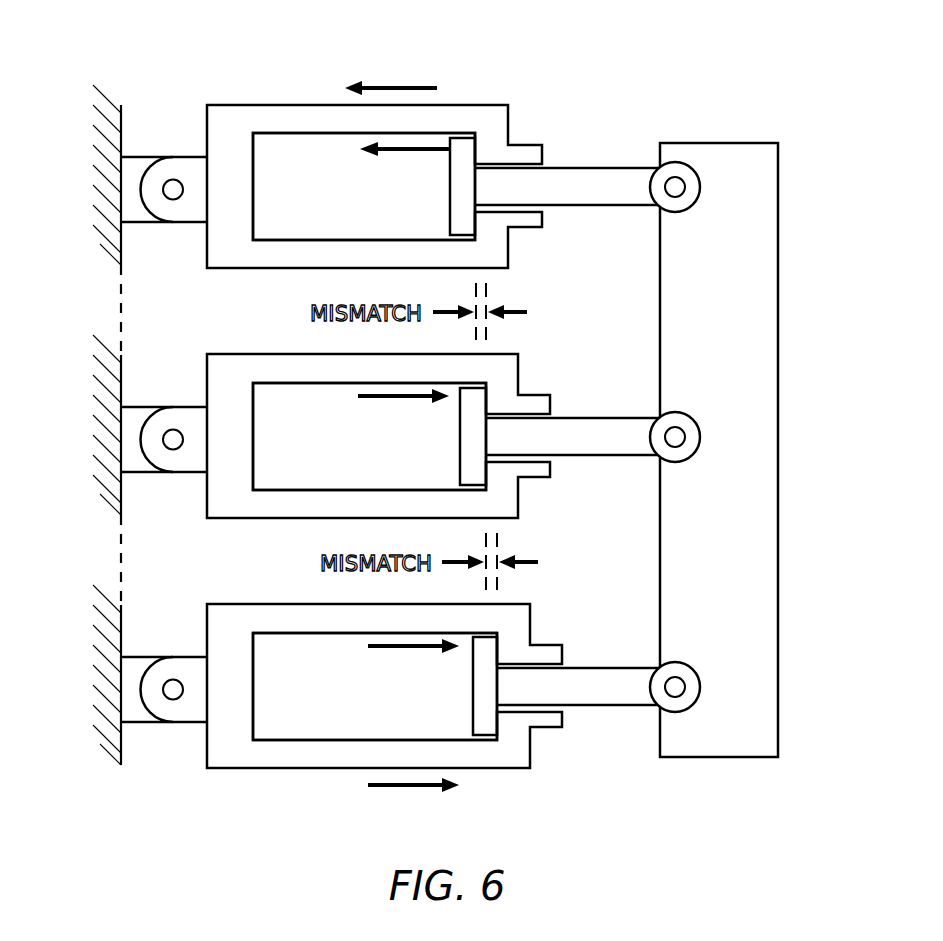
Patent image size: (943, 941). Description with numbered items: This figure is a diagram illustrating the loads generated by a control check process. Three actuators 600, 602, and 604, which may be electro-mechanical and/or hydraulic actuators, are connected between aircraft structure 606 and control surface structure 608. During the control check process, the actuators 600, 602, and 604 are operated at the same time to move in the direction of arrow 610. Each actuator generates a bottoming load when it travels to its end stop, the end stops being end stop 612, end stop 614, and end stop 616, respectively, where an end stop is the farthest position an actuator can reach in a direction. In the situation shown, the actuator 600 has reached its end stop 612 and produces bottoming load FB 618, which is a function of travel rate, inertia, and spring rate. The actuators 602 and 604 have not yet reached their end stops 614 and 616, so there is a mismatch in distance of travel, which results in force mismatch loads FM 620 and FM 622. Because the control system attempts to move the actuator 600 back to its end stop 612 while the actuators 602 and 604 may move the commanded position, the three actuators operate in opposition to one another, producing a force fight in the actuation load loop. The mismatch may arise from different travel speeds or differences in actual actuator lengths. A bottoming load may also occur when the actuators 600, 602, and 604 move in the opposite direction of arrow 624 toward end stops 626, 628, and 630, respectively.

The actuator 600 is at (320, 105).
The actuator 602 is at (255, 354).
The actuator 604 is at (320, 768).
The aircraft structure 606 is at (120, 300).
The control surface structure 608 is at (720, 143).
The arrow 610 is at (405, 790).
The end stop 612 is at (478, 144).
The end stop 614 is at (488, 392).
The end stop 616 is at (497, 721).
The bottoming load FB 618 is at (389, 153).
The force mismatch load FM 620 is at (373, 399).
The force mismatch load FM 622 is at (386, 649).
The arrow 624 is at (398, 88).
The end stop 626 is at (257, 148).
The end stop 628 is at (256, 474).
The end stop 630 is at (257, 720).